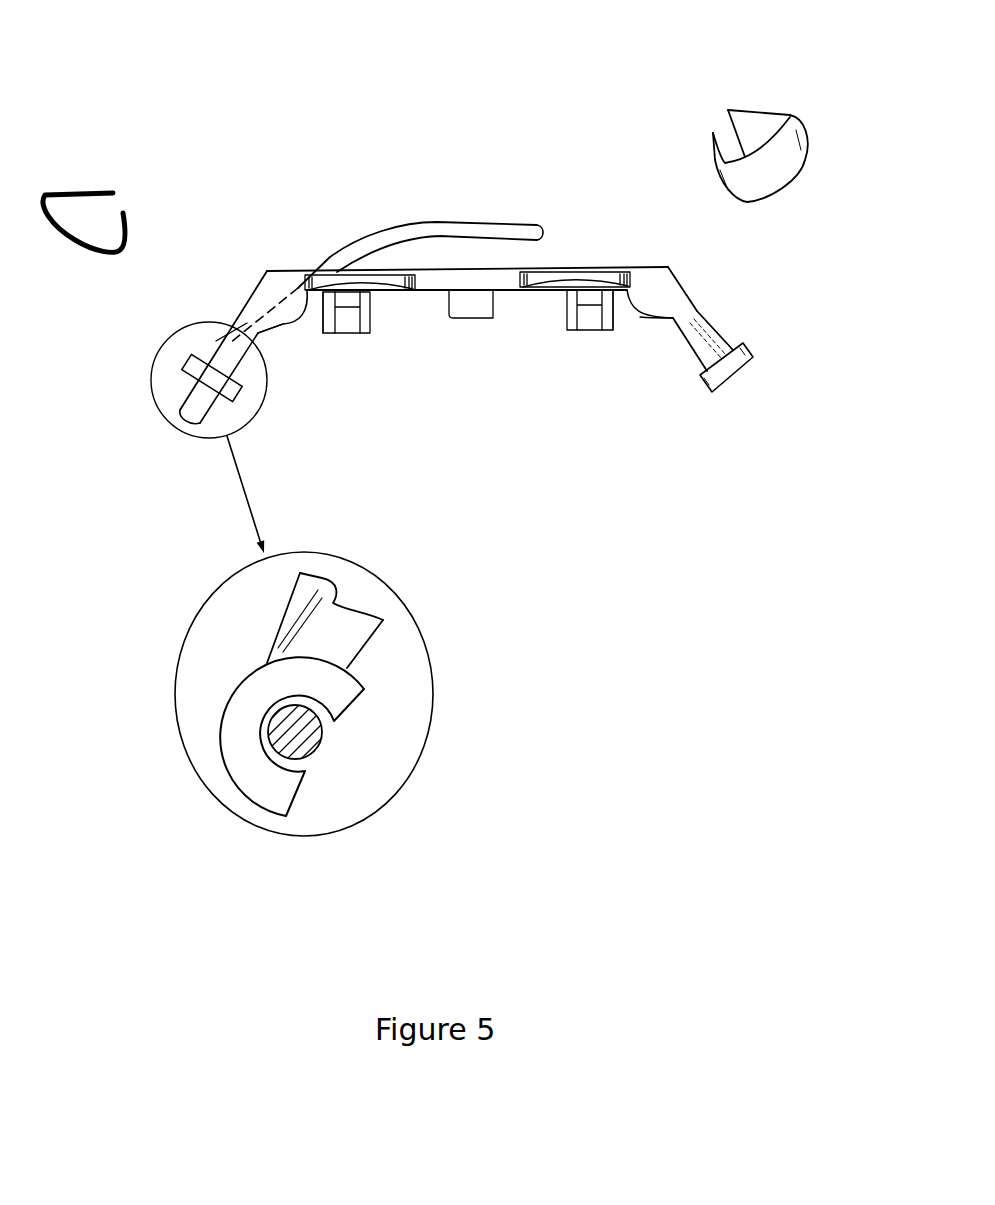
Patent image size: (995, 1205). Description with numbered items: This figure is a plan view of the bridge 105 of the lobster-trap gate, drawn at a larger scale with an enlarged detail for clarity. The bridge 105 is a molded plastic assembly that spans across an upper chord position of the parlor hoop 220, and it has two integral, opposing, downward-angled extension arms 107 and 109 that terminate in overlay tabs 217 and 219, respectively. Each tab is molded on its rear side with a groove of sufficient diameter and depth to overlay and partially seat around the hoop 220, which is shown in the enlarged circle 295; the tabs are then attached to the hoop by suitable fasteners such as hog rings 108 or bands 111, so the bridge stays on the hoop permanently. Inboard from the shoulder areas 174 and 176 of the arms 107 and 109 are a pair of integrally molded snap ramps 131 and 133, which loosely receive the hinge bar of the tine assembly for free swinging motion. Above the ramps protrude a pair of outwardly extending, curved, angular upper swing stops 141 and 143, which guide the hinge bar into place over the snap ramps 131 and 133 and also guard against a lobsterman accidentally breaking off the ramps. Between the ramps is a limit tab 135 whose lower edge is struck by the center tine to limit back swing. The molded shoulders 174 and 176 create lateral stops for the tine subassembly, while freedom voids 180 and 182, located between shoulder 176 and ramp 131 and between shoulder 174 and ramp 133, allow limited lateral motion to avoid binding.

The bridge 105 is at (474, 278).
The extension arm 107 is at (228, 345).
The hog ring 108 is at (75, 192).
The extension arm 109 is at (720, 330).
The band 111 is at (747, 108).
The snap ramp 131 is at (348, 325).
The snap ramp 133 is at (588, 322).
The limit tab 135 is at (477, 312).
The upper swing stop 141 is at (377, 287).
The upper swing stop 143 is at (590, 280).
The shoulder area 174 is at (653, 300).
The shoulder area 176 is at (292, 324).
The freedom void 180 is at (315, 324).
The freedom void 182 is at (627, 312).
The overlay tab 217 is at (183, 367).
The overlay tab 219 is at (753, 365).
The parlor hoop 220 is at (333, 260).
The enlarged circle 295 is at (397, 788).